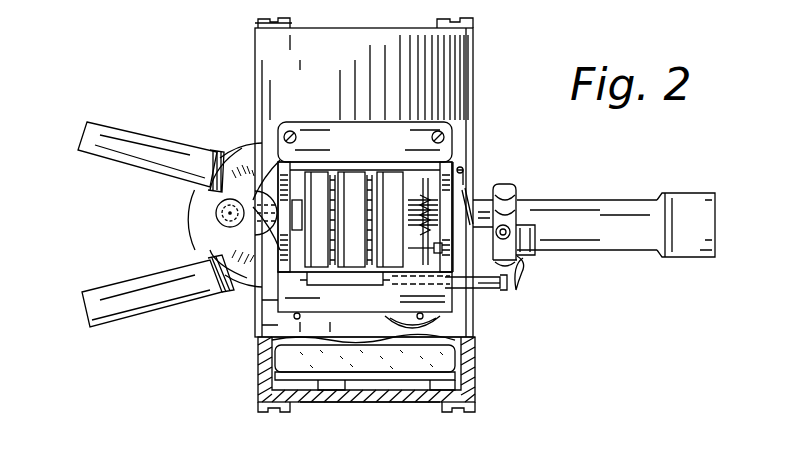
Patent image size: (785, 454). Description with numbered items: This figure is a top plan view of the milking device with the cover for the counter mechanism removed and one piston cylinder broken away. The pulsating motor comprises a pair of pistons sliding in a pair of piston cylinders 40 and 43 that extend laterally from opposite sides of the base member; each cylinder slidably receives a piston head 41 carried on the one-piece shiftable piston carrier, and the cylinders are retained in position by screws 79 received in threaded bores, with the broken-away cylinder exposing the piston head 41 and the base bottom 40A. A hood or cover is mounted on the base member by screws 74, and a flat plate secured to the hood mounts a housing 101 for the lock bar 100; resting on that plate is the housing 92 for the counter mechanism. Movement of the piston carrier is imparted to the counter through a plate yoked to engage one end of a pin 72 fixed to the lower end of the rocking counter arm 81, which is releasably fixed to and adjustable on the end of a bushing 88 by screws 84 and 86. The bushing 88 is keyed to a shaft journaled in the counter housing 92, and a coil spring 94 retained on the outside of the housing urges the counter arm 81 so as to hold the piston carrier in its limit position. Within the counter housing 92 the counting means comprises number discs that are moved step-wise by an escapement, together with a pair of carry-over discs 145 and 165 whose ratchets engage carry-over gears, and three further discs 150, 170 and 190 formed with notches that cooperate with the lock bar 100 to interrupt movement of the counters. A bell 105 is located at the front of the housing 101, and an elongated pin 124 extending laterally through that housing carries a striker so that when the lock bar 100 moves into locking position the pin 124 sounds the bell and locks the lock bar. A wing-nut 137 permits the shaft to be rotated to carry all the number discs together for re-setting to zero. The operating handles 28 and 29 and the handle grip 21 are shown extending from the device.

The handle grip 21 is at (692, 262).
The lower operating handle 28 is at (100, 325).
The upper operating handle 29 is at (92, 125).
The piston cylinder 40 is at (262, 333).
The base bottom 40A is at (310, 405).
The piston head 41 is at (265, 365).
The piston cylinder 43 is at (466, 52).
The pin 72 is at (530, 235).
The screw 74 is at (215, 212).
The screw 79 is at (255, 23).
The counter arm 81 is at (528, 268).
The screw 84 is at (510, 185).
The screw 86 is at (215, 248).
The bushing 88 is at (483, 202).
The counter housing 92 is at (282, 142).
The coil spring 94 is at (480, 205).
The lock bar 100 is at (337, 282).
The lock bar housing 101 is at (285, 298).
The bell 105 is at (398, 324).
The elongated pin 124 is at (495, 290).
The wing-nut 137 is at (230, 160).
The carry-over disc 145 is at (385, 170).
The disc 150 is at (389, 166).
The carry-over disc 165 is at (340, 170).
The disc 170 is at (349, 170).
The disc 190 is at (313, 168).